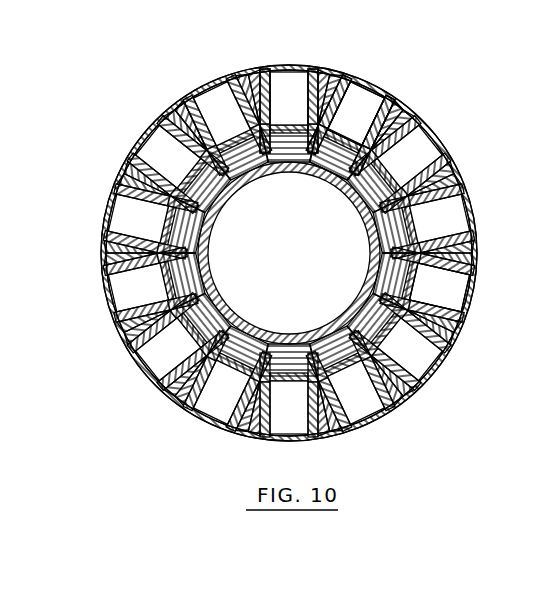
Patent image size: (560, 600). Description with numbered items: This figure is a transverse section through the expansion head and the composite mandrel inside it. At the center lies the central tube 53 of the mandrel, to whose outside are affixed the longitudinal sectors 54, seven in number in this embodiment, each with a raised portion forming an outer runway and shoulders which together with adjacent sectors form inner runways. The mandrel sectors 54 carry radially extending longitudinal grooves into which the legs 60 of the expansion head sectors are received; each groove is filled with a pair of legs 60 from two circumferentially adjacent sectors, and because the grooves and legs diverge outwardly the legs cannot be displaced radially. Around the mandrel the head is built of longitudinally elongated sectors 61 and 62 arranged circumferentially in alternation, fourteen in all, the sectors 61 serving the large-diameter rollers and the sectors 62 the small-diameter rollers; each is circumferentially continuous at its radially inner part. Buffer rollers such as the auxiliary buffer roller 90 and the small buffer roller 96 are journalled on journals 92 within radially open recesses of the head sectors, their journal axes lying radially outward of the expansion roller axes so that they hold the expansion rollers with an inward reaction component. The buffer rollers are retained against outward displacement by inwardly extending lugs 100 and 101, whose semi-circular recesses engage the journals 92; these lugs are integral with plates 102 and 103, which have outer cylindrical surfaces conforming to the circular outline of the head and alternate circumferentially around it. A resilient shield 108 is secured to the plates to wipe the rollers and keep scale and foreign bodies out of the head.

The central tube 53 is at (245, 183).
The longitudinal sector 54 is at (335, 180).
The leg 60 is at (350, 167).
The expansion head sector 61 is at (340, 72).
The expansion head sector 62 is at (254, 72).
The auxiliary buffer roller 90 is at (475, 281).
The journal 92 is at (432, 262).
The small buffer roller 96 is at (362, 97).
The lug 100 is at (153, 115).
The lug 101 is at (350, 75).
The plate 102 is at (148, 127).
The plate 103 is at (385, 93).
The resilient shield 108 is at (477, 236).